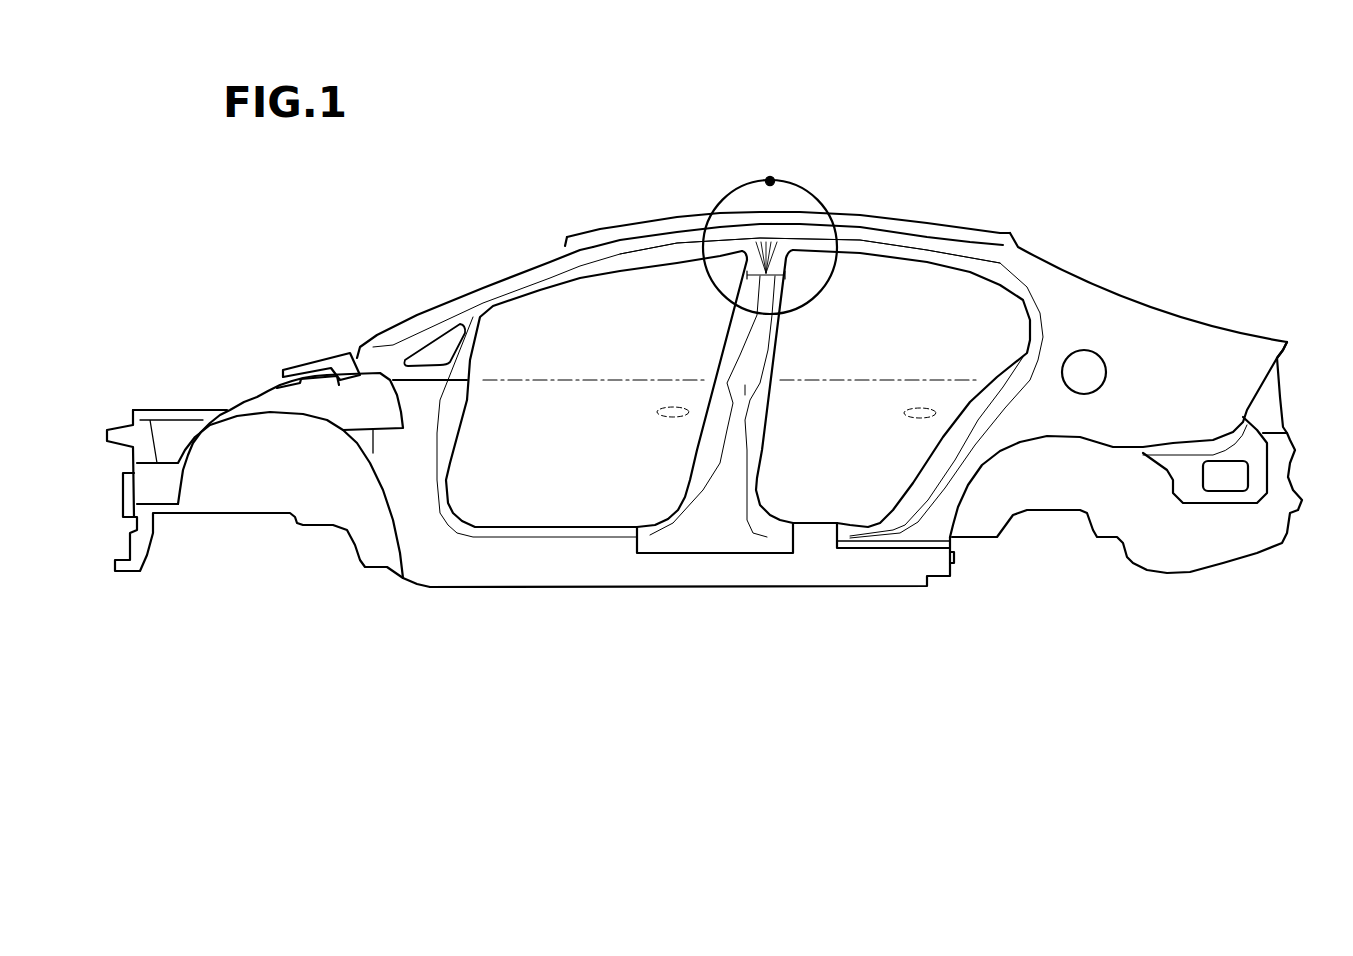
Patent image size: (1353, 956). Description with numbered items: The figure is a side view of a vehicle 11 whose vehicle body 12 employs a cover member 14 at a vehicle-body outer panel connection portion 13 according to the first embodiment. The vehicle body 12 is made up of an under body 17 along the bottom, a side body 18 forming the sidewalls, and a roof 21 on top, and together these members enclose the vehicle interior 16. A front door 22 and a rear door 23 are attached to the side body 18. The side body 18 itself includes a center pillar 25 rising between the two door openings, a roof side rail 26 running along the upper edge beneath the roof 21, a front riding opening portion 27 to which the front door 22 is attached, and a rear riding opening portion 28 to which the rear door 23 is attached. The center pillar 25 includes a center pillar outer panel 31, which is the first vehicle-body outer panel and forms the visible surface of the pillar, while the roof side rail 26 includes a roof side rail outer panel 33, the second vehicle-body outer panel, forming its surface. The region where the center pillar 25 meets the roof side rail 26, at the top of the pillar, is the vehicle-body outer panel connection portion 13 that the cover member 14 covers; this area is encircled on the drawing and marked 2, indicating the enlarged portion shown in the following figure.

The enlarged region shown in FIG. 2 is at (770, 180).
The vehicle 11 is at (446, 226).
The vehicle body 12 is at (421, 310).
The vehicle-body outer panel connection portion 13 is at (740, 270).
The cover member 14 is at (766, 262).
The vehicle interior 16 is at (574, 318).
The under body 17 is at (527, 592).
The side body 18 is at (686, 457).
The roof 21 is at (684, 222).
The front door 22 is at (610, 380).
The rear door 23 is at (873, 380).
The center pillar 25 is at (778, 355).
The roof side rail 26 is at (863, 228).
The front riding opening portion 27 is at (467, 423).
The rear riding opening portion 28 is at (943, 267).
The center pillar outer panel 31 is at (746, 390).
The roof side rail outer panel 33 is at (810, 250).